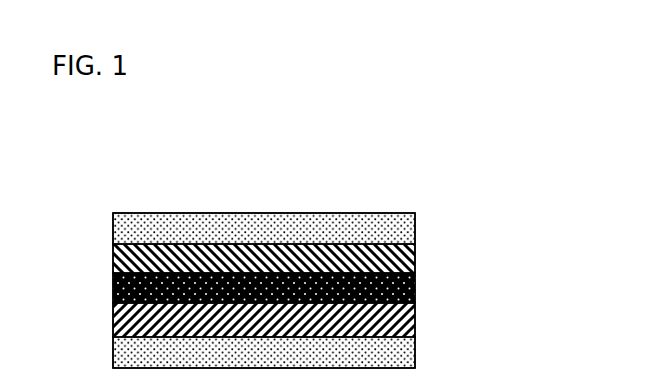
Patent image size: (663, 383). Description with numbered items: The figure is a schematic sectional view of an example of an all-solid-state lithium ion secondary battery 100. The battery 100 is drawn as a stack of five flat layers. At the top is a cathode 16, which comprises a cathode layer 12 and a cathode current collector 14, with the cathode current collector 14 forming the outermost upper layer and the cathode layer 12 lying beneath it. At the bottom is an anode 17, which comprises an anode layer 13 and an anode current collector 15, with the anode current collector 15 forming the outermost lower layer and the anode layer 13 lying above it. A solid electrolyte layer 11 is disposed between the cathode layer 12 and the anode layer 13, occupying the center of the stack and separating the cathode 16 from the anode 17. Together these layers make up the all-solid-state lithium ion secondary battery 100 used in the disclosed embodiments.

The all-solid-state lithium ion secondary battery 100 is at (140, 129).
The solid electrolyte layer 11 is at (415, 283).
The cathode layer 12 is at (415, 247).
The anode layer 13 is at (415, 322).
The cathode current collector 14 is at (415, 228).
The anode current collector 15 is at (415, 345).
The cathode 16 is at (487, 208).
The anode 17 is at (487, 315).